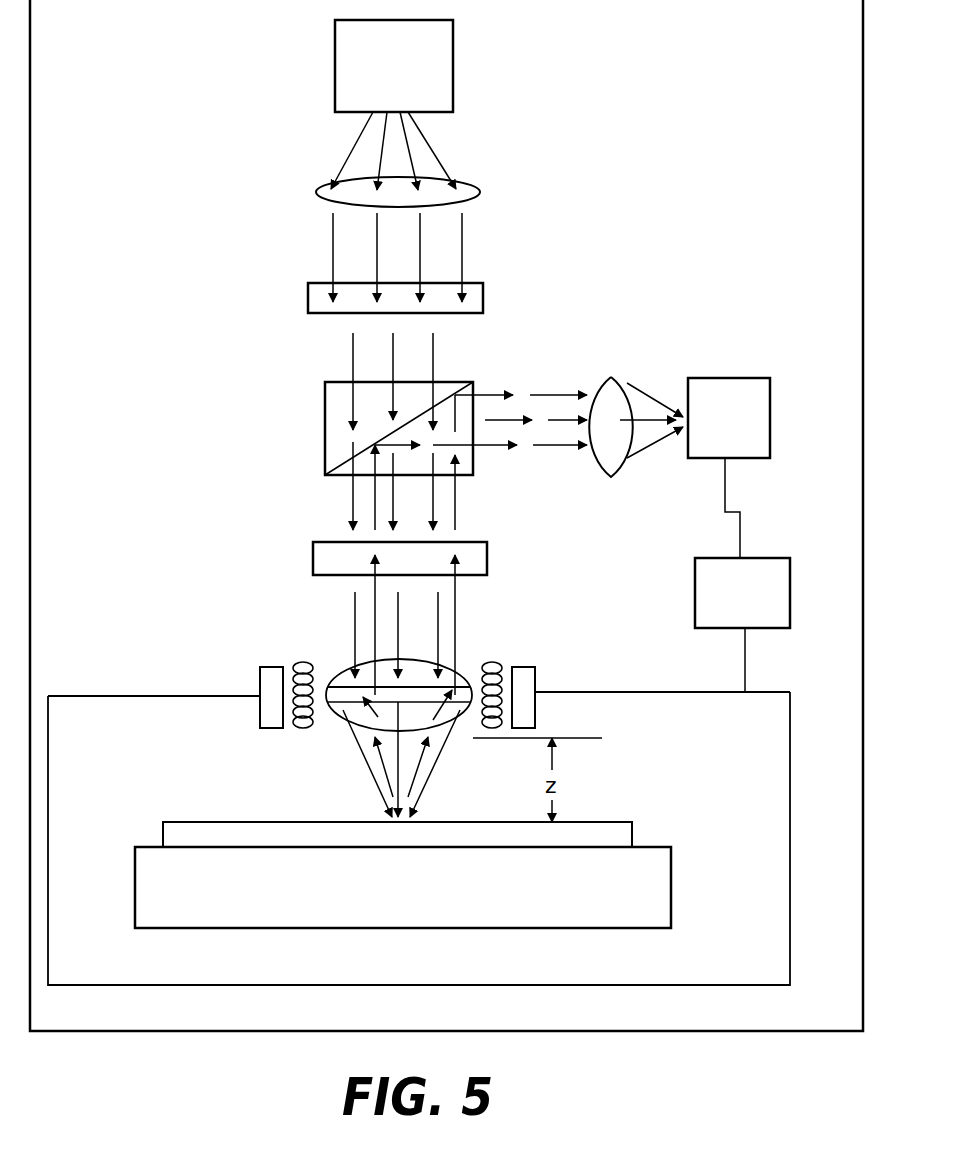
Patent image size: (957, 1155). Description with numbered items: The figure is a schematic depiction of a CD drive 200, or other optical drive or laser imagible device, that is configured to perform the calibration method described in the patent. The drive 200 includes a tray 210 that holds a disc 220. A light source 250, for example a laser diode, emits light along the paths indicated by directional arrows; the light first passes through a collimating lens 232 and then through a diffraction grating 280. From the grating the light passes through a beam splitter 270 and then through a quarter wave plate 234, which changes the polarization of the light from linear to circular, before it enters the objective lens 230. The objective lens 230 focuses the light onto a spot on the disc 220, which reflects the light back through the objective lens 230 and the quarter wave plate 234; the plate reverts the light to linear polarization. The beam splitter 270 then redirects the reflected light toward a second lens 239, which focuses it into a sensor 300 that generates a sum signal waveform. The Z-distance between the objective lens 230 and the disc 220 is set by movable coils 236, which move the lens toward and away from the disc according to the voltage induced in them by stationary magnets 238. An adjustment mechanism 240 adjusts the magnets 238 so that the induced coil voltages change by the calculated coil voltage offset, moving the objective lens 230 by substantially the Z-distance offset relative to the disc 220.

The CD drive 200 is at (147, 1032).
The tray 210 is at (660, 890).
The disc 220 is at (628, 838).
The objective lens 230 is at (336, 714).
The collimating lens 232 is at (322, 190).
The quarter wave plate 234 is at (316, 556).
The movable coils 236 is at (300, 660).
The stationary magnets 238 is at (262, 683).
The second lens 239 is at (608, 396).
The adjustment mechanism 240 is at (697, 597).
The light source 250 is at (453, 62).
The beam splitter 270 is at (327, 425).
The diffraction grating 280 is at (312, 297).
The sensor 300 is at (770, 417).